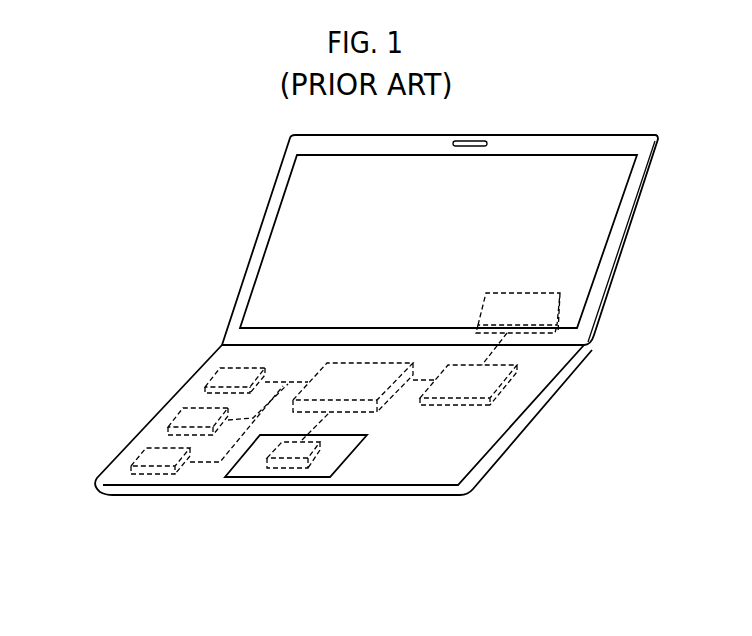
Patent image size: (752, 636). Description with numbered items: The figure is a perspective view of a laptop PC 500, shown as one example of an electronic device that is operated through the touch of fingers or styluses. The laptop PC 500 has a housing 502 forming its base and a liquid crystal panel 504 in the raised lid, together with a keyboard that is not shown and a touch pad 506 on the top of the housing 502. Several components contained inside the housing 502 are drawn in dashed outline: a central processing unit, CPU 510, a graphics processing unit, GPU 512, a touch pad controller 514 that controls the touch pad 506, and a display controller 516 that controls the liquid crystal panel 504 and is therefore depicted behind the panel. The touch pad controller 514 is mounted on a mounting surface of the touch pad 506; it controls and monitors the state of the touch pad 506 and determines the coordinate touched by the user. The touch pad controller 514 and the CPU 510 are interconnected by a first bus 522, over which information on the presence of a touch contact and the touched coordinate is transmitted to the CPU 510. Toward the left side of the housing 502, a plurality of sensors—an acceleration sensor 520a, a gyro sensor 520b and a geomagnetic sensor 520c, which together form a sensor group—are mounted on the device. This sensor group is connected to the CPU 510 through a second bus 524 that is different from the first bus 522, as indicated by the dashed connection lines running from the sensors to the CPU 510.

The laptop PC 500 is at (370, 617).
The housing 502 is at (547, 401).
The liquid crystal panel 504 is at (570, 272).
The touch pad 506 is at (252, 465).
The central processing unit (CPU) 510 is at (380, 390).
The graphics processing unit (GPU) 512 is at (468, 395).
The touch pad controller 514 is at (308, 458).
The display controller 516 is at (560, 308).
The acceleration sensor 520a is at (220, 371).
The gyro sensor 520b is at (183, 411).
The geomagnetic sensor 520c is at (148, 452).
The first bus 522 is at (333, 414).
The second bus 524 is at (265, 376).